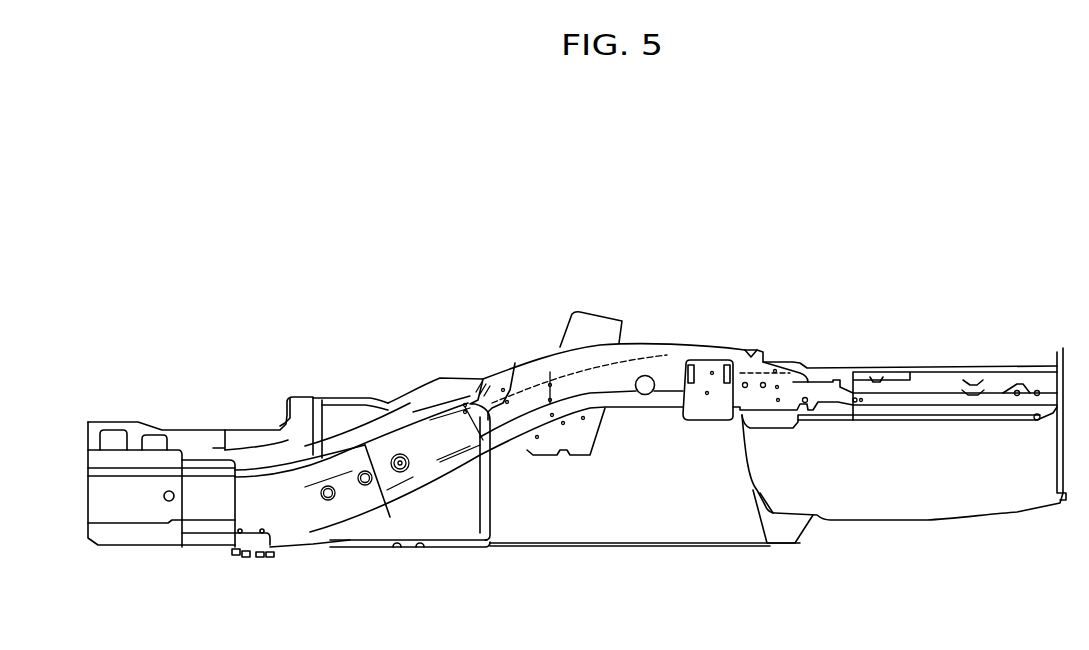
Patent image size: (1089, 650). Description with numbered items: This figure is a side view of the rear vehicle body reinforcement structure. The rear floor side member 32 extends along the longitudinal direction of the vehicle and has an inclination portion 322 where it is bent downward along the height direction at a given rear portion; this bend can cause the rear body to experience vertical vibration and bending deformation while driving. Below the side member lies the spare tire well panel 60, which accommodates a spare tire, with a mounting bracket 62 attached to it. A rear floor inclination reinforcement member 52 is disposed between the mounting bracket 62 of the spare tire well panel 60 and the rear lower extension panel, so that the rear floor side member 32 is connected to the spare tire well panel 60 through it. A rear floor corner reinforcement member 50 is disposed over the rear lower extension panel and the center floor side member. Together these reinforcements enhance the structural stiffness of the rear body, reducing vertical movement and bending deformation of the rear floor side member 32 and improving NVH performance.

The rear floor side member 32 is at (650, 362).
The inclination portion 322 is at (538, 380).
The rear floor corner reinforcement member 50 is at (315, 547).
The rear floor inclination reinforcement member 52 is at (627, 544).
The spare tire well panel 60 is at (943, 488).
The mounting bracket 62 is at (808, 535).